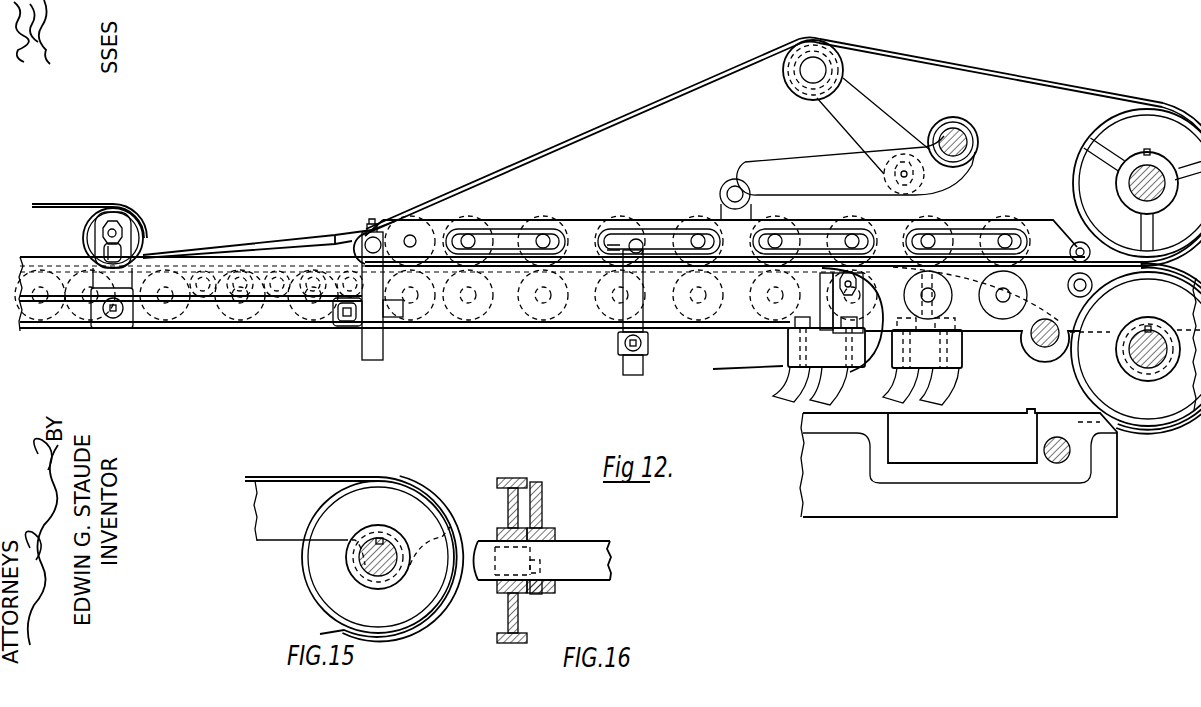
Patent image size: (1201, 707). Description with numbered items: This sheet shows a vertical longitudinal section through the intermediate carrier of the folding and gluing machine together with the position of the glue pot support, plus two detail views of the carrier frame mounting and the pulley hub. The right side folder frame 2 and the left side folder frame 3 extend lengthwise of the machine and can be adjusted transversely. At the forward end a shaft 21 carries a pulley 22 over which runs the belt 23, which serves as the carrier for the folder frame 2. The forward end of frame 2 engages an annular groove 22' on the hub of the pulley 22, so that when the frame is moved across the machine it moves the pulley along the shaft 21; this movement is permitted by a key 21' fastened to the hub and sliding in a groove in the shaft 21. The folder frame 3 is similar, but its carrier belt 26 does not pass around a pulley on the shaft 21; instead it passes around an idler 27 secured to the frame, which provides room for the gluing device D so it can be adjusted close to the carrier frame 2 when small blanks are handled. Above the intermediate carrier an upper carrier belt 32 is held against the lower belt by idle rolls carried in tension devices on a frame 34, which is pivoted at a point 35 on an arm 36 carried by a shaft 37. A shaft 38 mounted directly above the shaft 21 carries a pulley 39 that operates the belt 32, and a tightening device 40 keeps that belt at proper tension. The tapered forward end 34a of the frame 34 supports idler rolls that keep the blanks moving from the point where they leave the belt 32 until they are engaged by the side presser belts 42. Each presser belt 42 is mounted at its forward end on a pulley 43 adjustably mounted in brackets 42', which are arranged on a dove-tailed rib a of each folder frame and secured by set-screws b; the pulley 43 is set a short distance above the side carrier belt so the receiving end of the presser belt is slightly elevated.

In FIG. 12, the right side folder frame 2 is at (983, 327).
In FIG. 16, the right side folder frame 2 is at (542, 497).
In FIG. 12, the left side folder frame 3 is at (262, 320).
In FIG. 12, the longitudinally extending rib a is at (193, 318).
In FIG. 12, the set-screws b is at (113, 312).
In FIG. 12, the shaft 21 is at (1148, 366).
In FIG. 15, the shaft 21 is at (323, 568).
In FIG. 16, the shaft 21 is at (567, 570).
In FIG. 12, the key 21' is at (1166, 313).
In FIG. 15, the key 21' is at (427, 510).
In FIG. 12, the pulley 22 is at (1119, 349).
In FIG. 15, the pulley 22 is at (378, 557).
In FIG. 16, the pulley 22 is at (550, 560).
In FIG. 16, the annular groove 22' is at (581, 552).
In FIG. 12, the belt 23 is at (1130, 430).
In FIG. 15, the belt 23 is at (327, 476).
In FIG. 12, the carrier belt 26 is at (727, 372).
In FIG. 12, the idler 27 is at (783, 337).
In FIG. 12, the upper carrier belt 32 is at (583, 135).
In FIG. 12, the frame 34 is at (582, 222).
In FIG. 12, the forward end of frame 34a is at (258, 247).
In FIG. 12, the pivot point 35 is at (731, 186).
In FIG. 12, the arm 36 is at (800, 162).
In FIG. 12, the shaft 37 is at (963, 138).
In FIG. 12, the shaft 38 is at (1148, 181).
In FIG. 12, the pulley 39 is at (1097, 126).
In FIG. 12, the tightening device 40 is at (843, 70).
In FIG. 12, the side presser belts 42 is at (89, 208).
In FIG. 12, the brackets 42' is at (69, 245).
In FIG. 12, the pulley 43 is at (136, 222).
In FIG. 12, the gluing device D is at (958, 463).